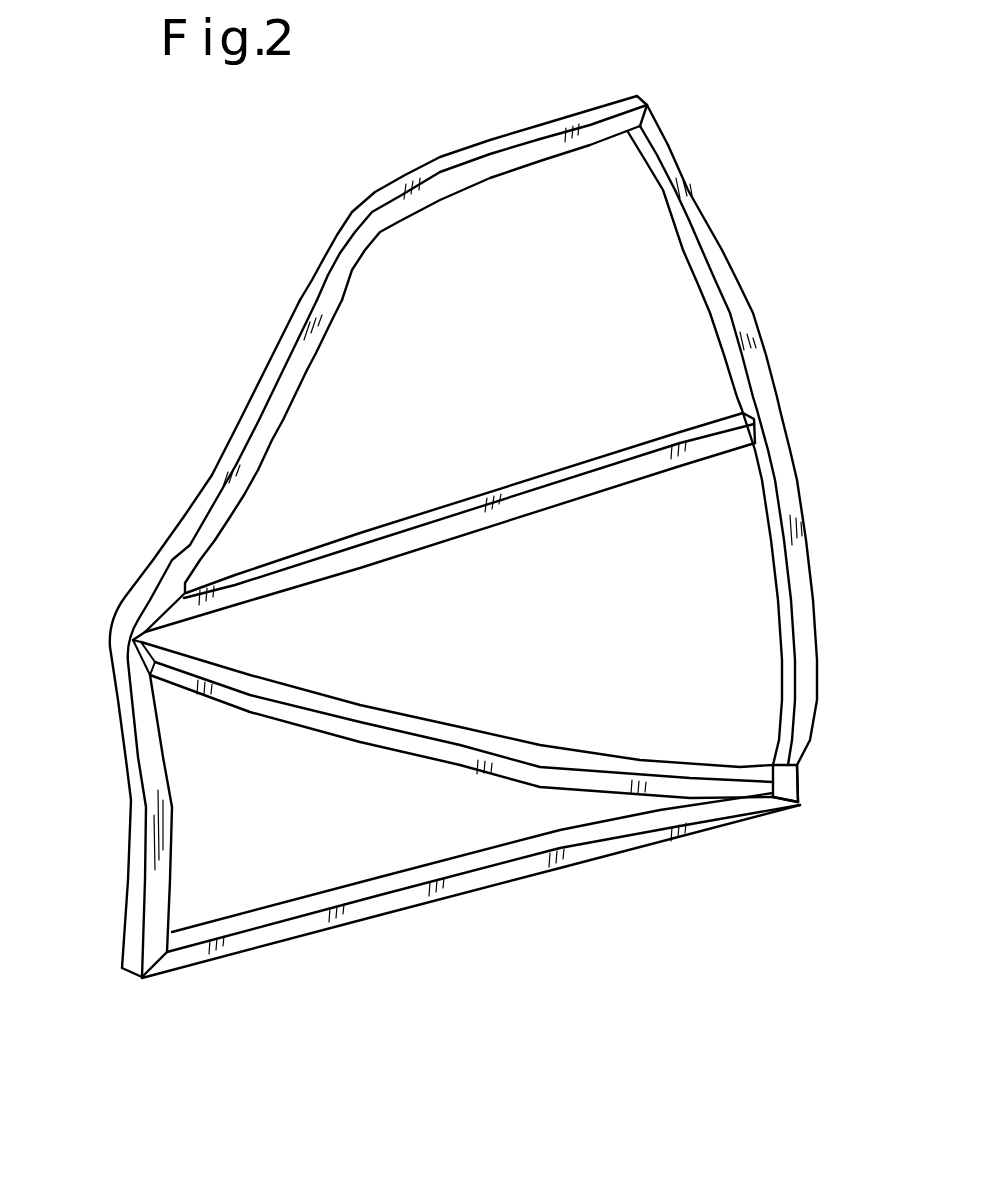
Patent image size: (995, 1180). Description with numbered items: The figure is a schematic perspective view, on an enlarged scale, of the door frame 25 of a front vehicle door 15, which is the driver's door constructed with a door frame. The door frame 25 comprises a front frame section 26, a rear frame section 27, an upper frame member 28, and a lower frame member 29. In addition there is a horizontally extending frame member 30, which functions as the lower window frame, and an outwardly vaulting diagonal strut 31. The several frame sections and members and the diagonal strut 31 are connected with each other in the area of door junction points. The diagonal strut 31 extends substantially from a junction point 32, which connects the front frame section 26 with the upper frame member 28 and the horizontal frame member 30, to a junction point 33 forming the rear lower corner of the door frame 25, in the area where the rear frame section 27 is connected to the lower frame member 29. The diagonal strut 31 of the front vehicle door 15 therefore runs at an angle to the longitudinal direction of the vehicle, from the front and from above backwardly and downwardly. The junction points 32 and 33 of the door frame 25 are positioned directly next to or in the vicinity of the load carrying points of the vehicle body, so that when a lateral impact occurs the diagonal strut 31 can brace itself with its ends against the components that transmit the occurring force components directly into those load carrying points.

The front vehicle door 15 is at (200, 386).
The door frame 25 is at (280, 310).
The front frame section 26 is at (137, 803).
The rear frame section 27 is at (780, 473).
The upper frame member 28 is at (338, 242).
The lower frame member 29 is at (497, 878).
The horizontally extending frame member 30 is at (505, 490).
The diagonal strut 31 is at (500, 747).
The junction point 32 is at (108, 623).
The junction point 33 is at (800, 788).